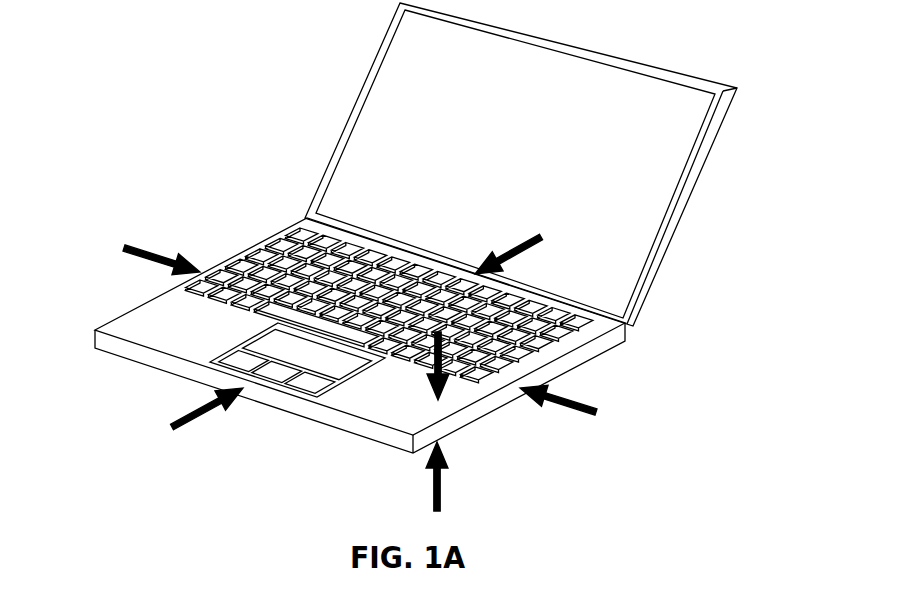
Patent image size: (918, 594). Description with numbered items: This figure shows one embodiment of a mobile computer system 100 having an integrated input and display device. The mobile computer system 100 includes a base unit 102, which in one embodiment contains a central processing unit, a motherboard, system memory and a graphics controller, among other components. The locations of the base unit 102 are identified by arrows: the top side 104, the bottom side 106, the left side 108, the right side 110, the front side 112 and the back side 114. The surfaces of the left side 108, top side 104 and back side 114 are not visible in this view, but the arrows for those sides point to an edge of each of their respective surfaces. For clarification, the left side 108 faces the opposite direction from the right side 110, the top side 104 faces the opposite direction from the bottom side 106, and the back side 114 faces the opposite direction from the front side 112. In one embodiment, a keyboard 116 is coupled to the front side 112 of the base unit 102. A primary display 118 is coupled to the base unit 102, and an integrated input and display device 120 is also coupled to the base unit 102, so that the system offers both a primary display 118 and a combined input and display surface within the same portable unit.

The mobile computer system 100 is at (163, 81).
The base unit 102 is at (142, 322).
The top side of the base unit 104 is at (509, 248).
The bottom side of the base unit 106 is at (201, 409).
The left side of the base unit 108 is at (161, 253).
The right side of the base unit 110 is at (561, 398).
The front side of the base unit 112 is at (423, 366).
The back side of the base unit 114 is at (453, 476).
The keyboard 116 is at (277, 243).
The primary display 118 is at (377, 108).
The integrated input and display device 120 is at (315, 375).